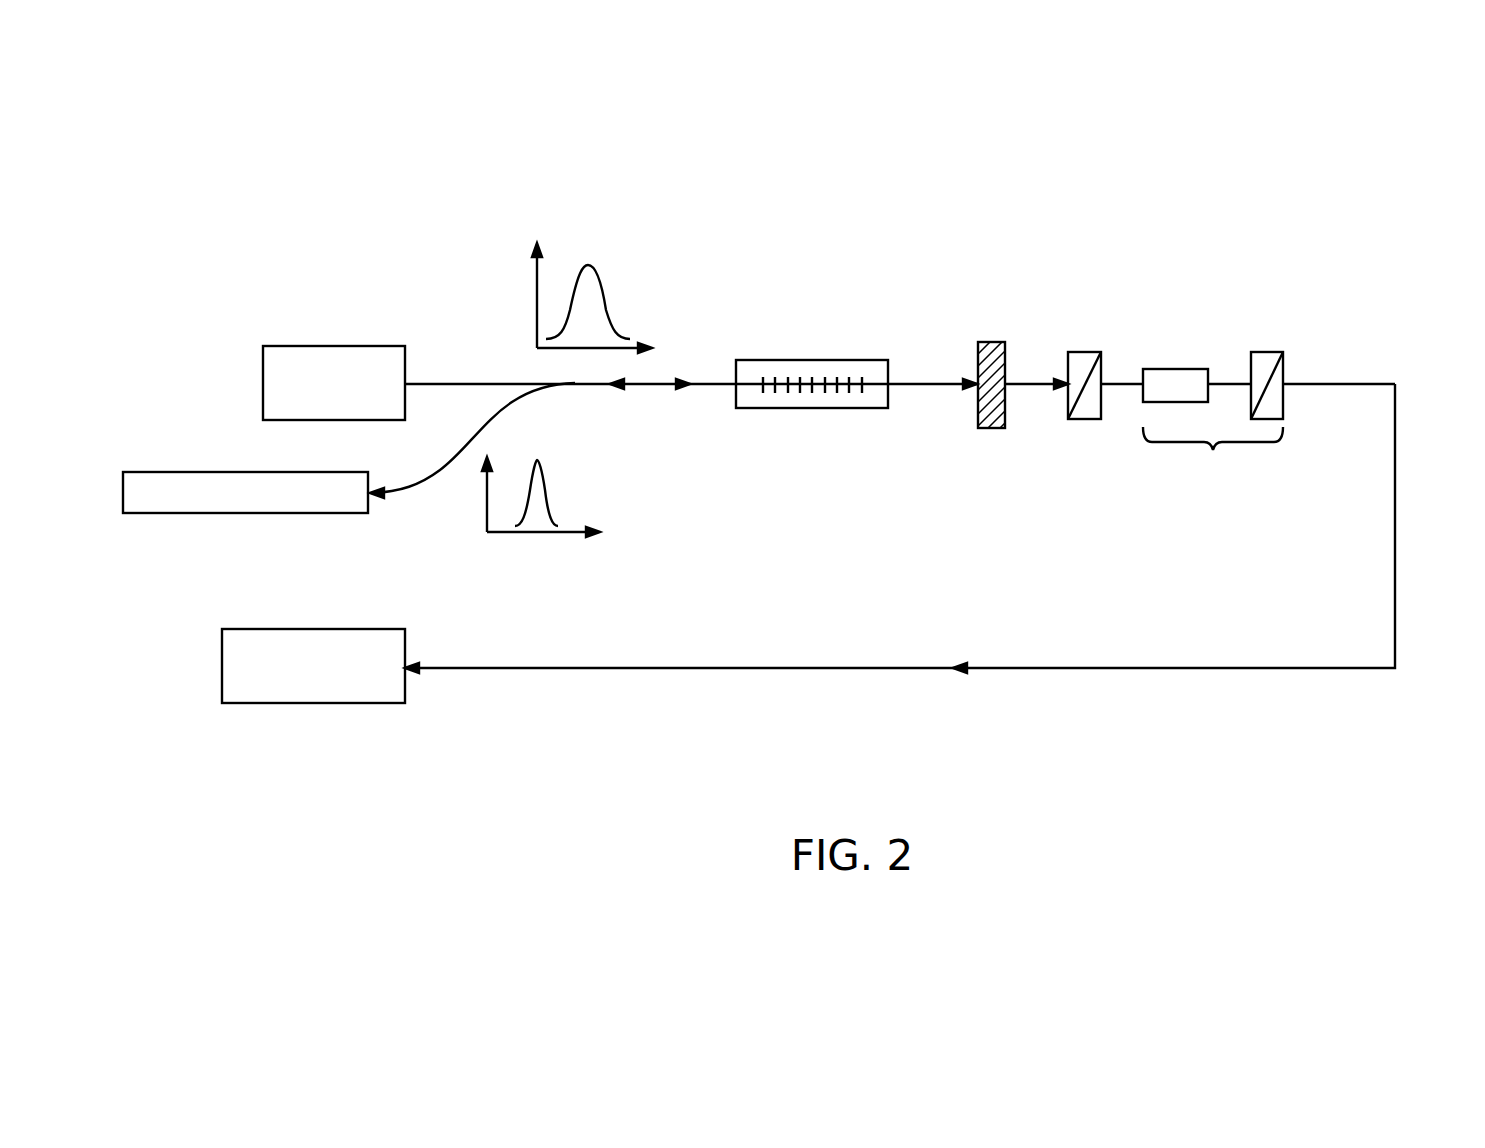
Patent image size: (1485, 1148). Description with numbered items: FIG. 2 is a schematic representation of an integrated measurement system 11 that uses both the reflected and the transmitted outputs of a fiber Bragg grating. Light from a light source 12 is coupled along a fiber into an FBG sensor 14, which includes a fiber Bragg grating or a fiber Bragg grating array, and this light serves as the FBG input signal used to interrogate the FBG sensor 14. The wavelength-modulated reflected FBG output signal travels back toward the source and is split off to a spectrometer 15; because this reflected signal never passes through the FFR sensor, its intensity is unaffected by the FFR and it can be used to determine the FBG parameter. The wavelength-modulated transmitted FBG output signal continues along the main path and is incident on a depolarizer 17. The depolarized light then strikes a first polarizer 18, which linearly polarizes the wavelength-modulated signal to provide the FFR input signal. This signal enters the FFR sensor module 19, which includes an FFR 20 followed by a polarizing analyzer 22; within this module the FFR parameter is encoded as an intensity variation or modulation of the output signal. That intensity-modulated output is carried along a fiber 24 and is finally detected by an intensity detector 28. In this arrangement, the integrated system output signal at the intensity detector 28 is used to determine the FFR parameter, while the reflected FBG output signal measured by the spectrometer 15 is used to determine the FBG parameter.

The system 11 is at (1356, 146).
The light source 12 is at (333, 346).
The FBG sensor 14 is at (783, 360).
The spectrometer 15 is at (155, 472).
The depolarizer 17 is at (992, 342).
The first polarizer 18 is at (1085, 352).
The FFR sensor module 19 is at (1213, 457).
The FFR 20 is at (1175, 369).
The polarizing analyzer 22 is at (1267, 352).
The fiber 24 is at (900, 668).
The intensity detector 28 is at (313, 703).